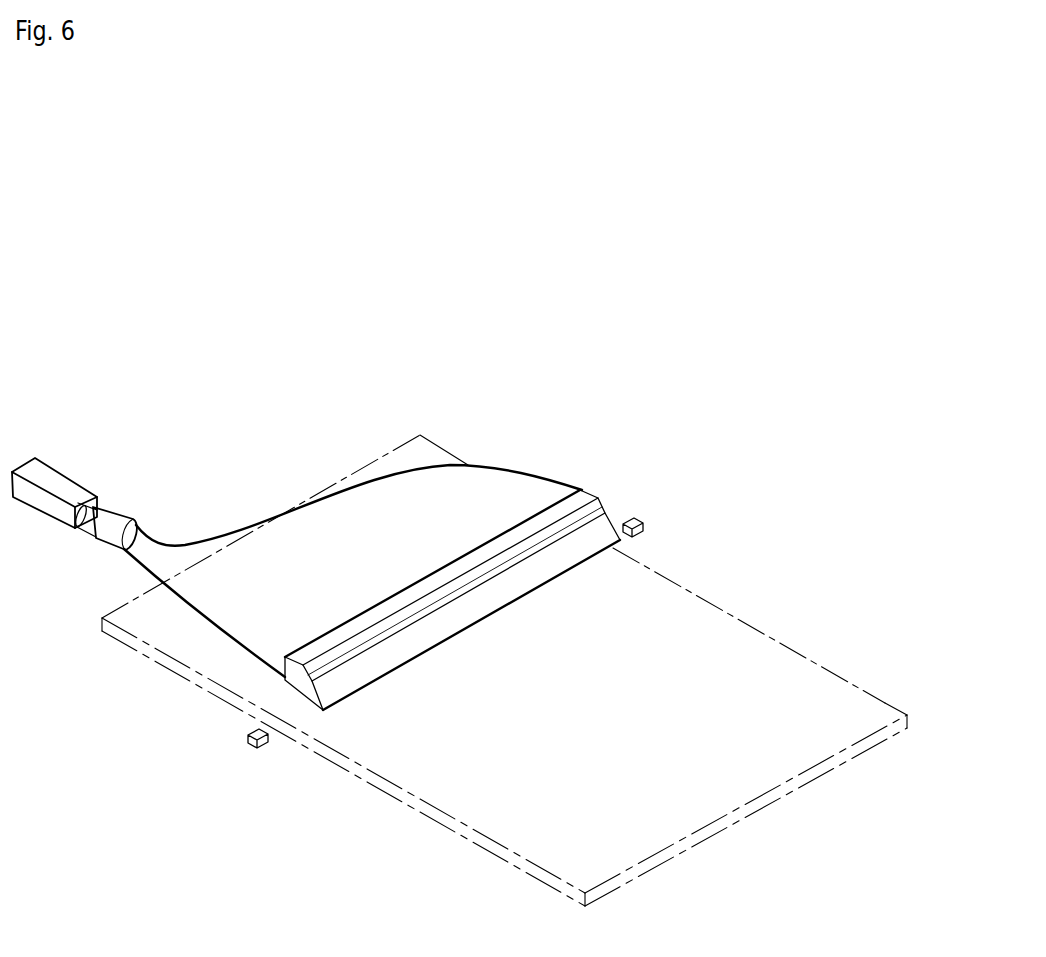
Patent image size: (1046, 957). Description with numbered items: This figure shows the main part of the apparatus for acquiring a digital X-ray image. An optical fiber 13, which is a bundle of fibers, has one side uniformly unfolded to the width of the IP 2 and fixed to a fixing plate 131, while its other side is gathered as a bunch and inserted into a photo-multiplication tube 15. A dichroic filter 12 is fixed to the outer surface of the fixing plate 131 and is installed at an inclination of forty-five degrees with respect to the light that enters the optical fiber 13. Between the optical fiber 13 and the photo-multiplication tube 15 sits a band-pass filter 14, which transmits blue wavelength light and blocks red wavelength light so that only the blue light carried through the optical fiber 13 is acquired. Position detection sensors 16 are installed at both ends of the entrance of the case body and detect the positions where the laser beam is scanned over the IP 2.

The IP 2 is at (757, 640).
The dichroic filter 12 is at (607, 523).
The optical fiber 13 is at (477, 477).
The fixing plate 131 is at (285, 677).
The band-pass filter 14 is at (97, 503).
The photo-multiplication tube 15 is at (67, 482).
The position detection sensor 16 is at (637, 513).